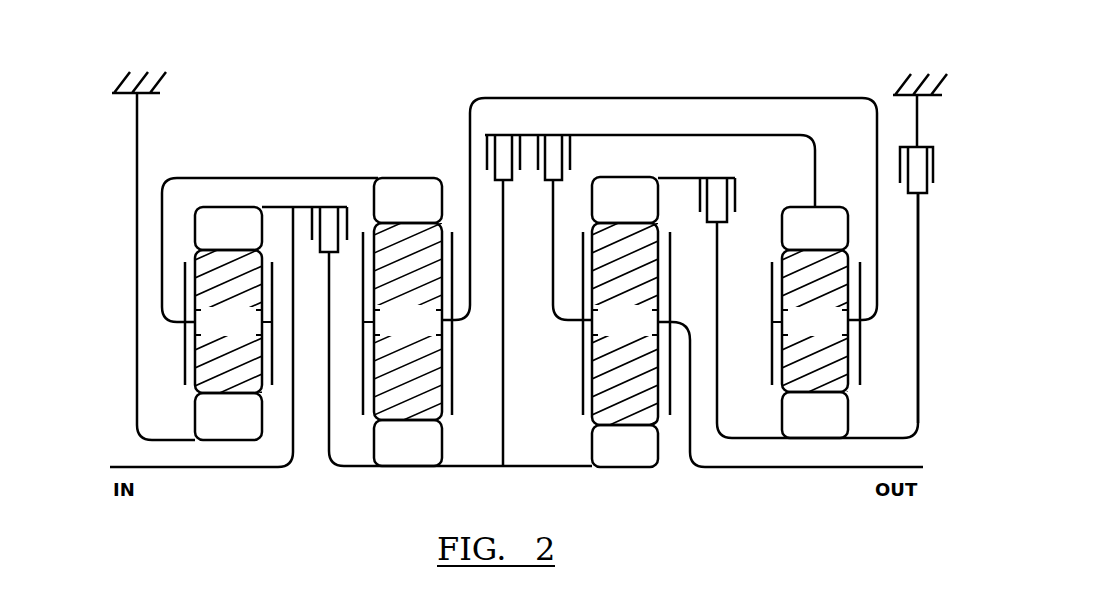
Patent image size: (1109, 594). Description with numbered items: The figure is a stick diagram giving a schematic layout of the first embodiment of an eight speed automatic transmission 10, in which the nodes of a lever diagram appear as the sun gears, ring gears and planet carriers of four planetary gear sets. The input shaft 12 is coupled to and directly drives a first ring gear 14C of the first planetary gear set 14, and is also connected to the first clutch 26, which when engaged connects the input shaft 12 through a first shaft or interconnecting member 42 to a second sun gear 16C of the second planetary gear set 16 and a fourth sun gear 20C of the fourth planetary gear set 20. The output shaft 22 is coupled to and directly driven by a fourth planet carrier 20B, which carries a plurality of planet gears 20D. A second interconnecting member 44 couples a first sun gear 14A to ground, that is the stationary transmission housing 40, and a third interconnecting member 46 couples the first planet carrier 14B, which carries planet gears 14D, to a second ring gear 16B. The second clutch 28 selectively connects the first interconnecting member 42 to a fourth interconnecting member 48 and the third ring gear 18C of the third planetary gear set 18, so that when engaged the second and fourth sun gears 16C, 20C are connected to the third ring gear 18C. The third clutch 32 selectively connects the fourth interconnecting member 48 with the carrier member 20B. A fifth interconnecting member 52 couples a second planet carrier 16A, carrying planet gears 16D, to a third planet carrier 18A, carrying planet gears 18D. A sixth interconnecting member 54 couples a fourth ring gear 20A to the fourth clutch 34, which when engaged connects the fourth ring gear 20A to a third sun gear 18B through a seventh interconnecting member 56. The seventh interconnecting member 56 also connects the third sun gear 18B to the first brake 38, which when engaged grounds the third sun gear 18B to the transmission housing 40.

The eight speed transmission 10 is at (730, 76).
The input shaft 12 is at (170, 468).
The first planetary gear set 14 is at (197, 364).
The first sun gear 14A is at (209, 432).
The first planet carrier 14B is at (185, 353).
The first ring gear 14C is at (209, 245).
The planet gears 14D is at (209, 333).
The second planetary gear set 16 is at (431, 271).
The second planet carrier 16A is at (452, 345).
The second ring gear 16B is at (389, 216).
The second sun gear 16C is at (389, 459).
The planet gears 16D is at (389, 333).
The third planetary gear set 18 is at (836, 371).
The third planet carrier 18A is at (862, 356).
The third sun gear 18B is at (796, 431).
The third ring gear 18C is at (796, 245).
The planet gears 18D is at (796, 333).
The fourth planetary gear set 20 is at (657, 340).
The fourth ring gear 20A is at (606, 216).
The fourth planet carrier 20B is at (672, 247).
The fourth sun gear 20C is at (606, 462).
The planet gears 20D is at (606, 333).
The output shaft 22 is at (828, 468).
The first clutch 26 is at (347, 229).
The second clutch 28 is at (487, 152).
The third clutch 32 is at (570, 152).
The fourth clutch 34 is at (735, 187).
The first brake 38 is at (933, 176).
The transmission housing 40 is at (130, 93).
The first interconnecting member 42 is at (468, 468).
The second interconnecting member 44 is at (135, 208).
The third interconnecting member 46 is at (255, 177).
The fourth interconnecting member 48 is at (643, 135).
The fifth interconnecting member 52 is at (840, 97).
The sixth interconnecting member 54 is at (660, 177).
The seventh interconnecting member 56 is at (918, 402).